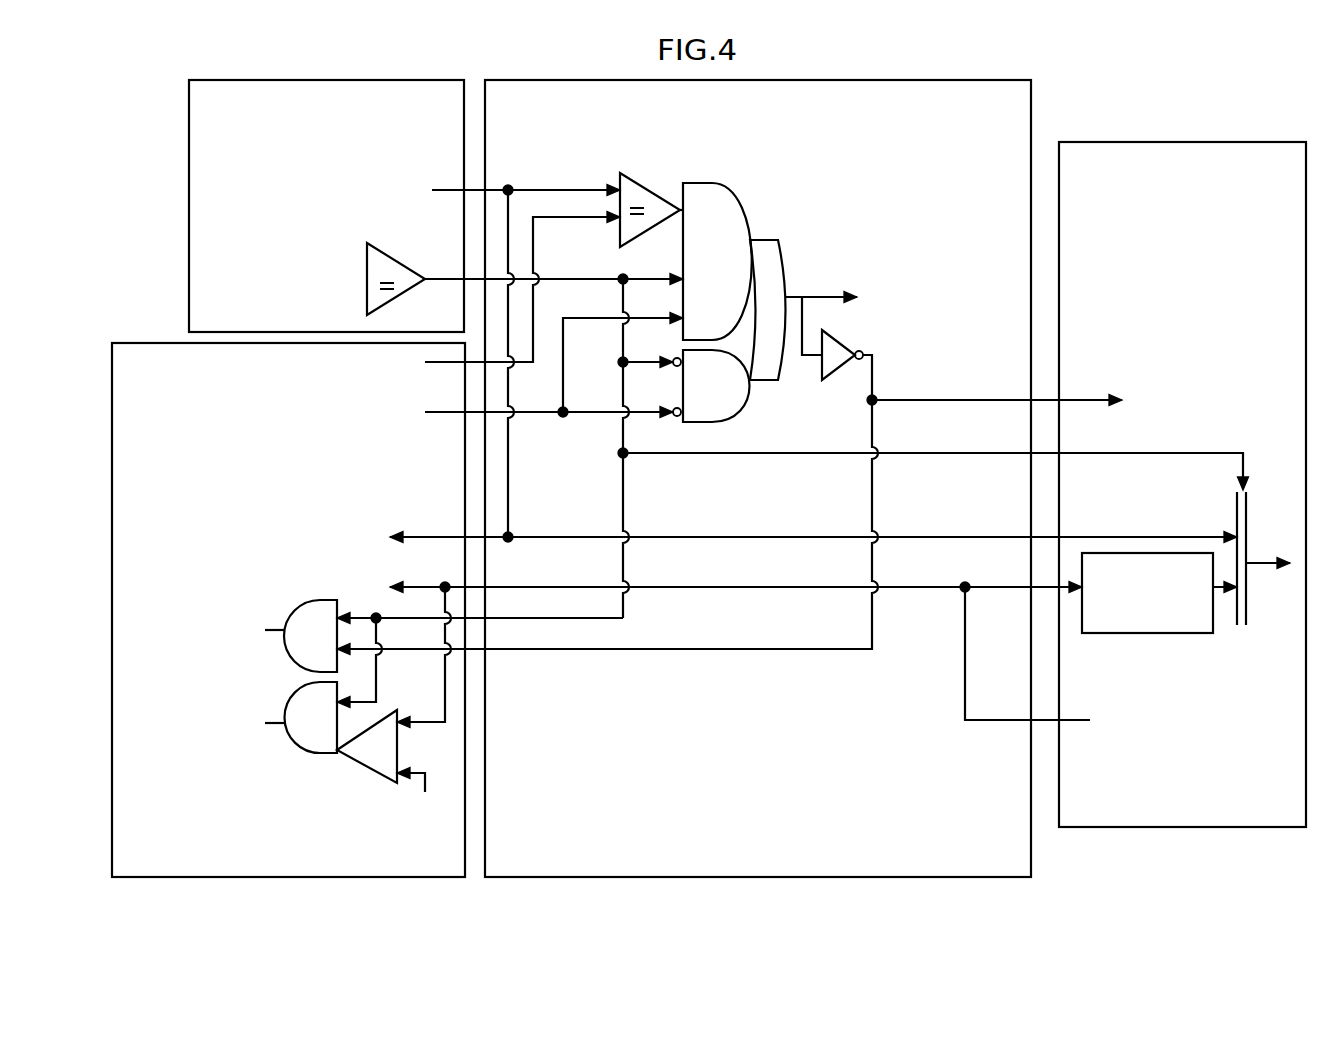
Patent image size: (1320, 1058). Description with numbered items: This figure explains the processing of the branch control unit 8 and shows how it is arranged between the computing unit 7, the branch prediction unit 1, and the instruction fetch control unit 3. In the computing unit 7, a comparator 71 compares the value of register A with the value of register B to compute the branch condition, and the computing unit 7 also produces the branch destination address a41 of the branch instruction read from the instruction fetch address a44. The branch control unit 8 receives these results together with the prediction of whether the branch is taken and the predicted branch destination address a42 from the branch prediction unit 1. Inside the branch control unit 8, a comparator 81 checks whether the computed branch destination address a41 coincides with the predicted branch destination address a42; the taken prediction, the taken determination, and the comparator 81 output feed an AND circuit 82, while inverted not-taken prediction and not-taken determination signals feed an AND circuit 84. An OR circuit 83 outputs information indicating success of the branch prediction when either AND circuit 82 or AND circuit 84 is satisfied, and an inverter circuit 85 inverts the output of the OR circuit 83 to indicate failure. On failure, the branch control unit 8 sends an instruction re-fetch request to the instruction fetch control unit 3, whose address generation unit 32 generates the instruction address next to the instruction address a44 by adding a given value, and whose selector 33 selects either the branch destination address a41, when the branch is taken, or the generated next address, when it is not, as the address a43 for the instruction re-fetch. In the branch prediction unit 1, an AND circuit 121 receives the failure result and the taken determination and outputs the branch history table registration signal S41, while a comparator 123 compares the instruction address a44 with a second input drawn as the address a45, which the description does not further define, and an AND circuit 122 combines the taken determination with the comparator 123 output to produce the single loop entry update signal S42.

The branch prediction unit 1 is at (153, 342).
The instruction fetch control unit 3 is at (1217, 142).
The computing unit 7 is at (187, 133).
The branch control unit 8 is at (1033, 117).
The address generation unit 32 is at (1105, 635).
The selector 33 is at (1248, 520).
The comparator 71 is at (390, 255).
The comparator 81 is at (643, 177).
The AND circuit 82 is at (735, 183).
The OR circuit 83 is at (782, 253).
The AND circuit 84 is at (747, 402).
The inverter circuit 85 is at (830, 378).
The AND circuit 121 is at (308, 598).
The AND circuit 122 is at (290, 742).
The comparator 123 is at (357, 758).
The branch destination address a41 is at (502, 360).
The branch destination address a42 is at (497, 294).
The address for the instruction re-fetch a43 is at (841, 500).
The instruction fetch address a44 is at (813, 660).
The fetch address signal a45 is at (421, 799).
The branch history table registration signal S41 is at (252, 630).
The single loop entry update signal S42 is at (252, 725).